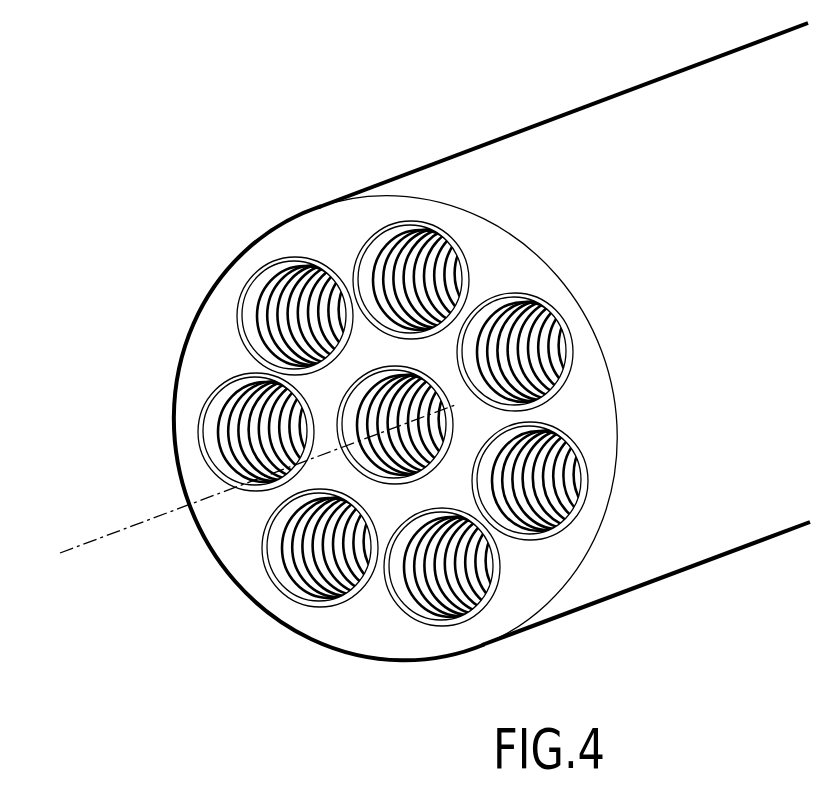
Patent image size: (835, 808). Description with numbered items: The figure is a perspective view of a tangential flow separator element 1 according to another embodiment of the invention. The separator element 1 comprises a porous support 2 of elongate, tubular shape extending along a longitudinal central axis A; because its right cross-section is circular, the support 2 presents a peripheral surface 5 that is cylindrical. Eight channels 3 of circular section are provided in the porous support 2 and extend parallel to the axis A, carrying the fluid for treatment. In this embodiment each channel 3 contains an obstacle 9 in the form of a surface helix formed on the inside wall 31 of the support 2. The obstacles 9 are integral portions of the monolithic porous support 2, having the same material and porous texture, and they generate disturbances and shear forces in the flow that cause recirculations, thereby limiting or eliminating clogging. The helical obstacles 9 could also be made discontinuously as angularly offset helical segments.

The tangential flow separator element 1 is at (207, 197).
The porous support 2 is at (197, 342).
The channels 3 is at (247, 467).
The inside wall 31 is at (405, 236).
The peripheral surface 5 is at (462, 150).
The obstacles 9 is at (207, 430).
The longitudinal central axis A is at (90, 541).